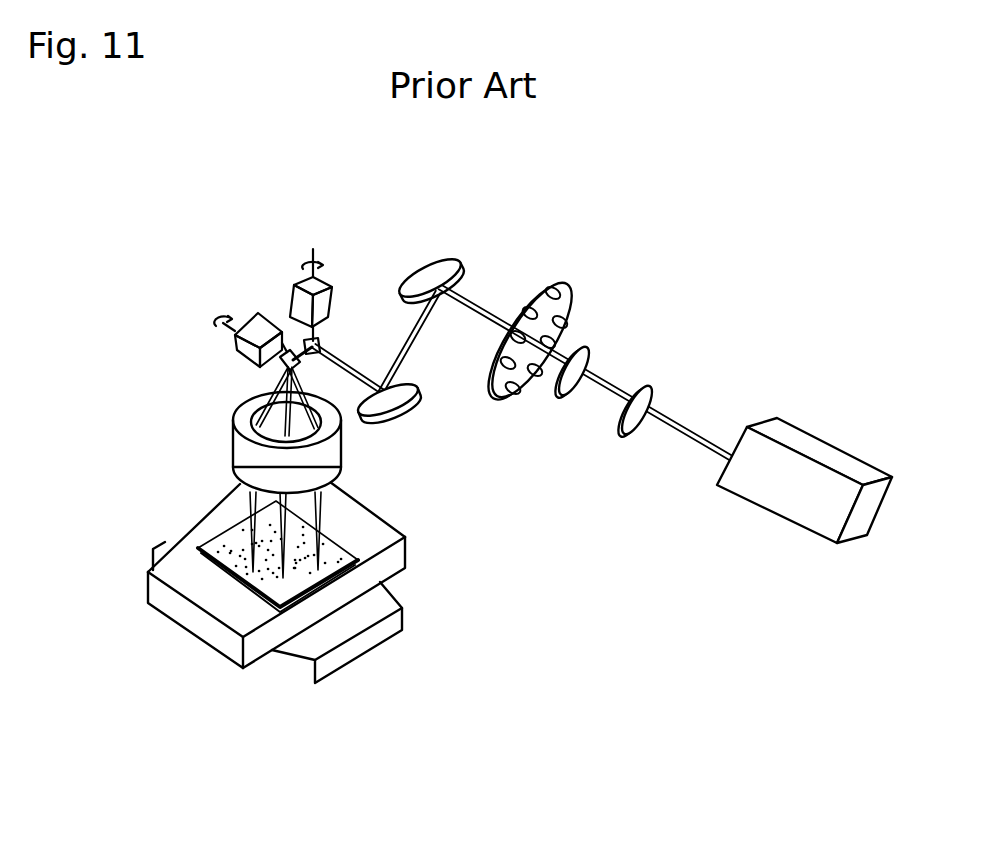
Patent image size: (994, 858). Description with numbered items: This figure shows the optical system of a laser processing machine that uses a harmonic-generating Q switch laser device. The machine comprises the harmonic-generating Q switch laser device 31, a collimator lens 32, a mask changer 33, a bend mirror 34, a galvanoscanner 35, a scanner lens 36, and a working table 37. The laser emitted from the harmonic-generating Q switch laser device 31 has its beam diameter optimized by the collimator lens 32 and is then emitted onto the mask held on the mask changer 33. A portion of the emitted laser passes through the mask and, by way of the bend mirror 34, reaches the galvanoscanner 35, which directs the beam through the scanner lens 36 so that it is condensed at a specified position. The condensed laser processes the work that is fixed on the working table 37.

The harmonic-generating Q switch laser device 31 is at (835, 450).
The collimator lens 32 is at (648, 390).
The mask changer 33 is at (552, 283).
The bend mirror 34 is at (450, 430).
The galvanoscanner 35 is at (297, 281).
The scanner lens 36 is at (240, 443).
The working table 37 is at (195, 636).